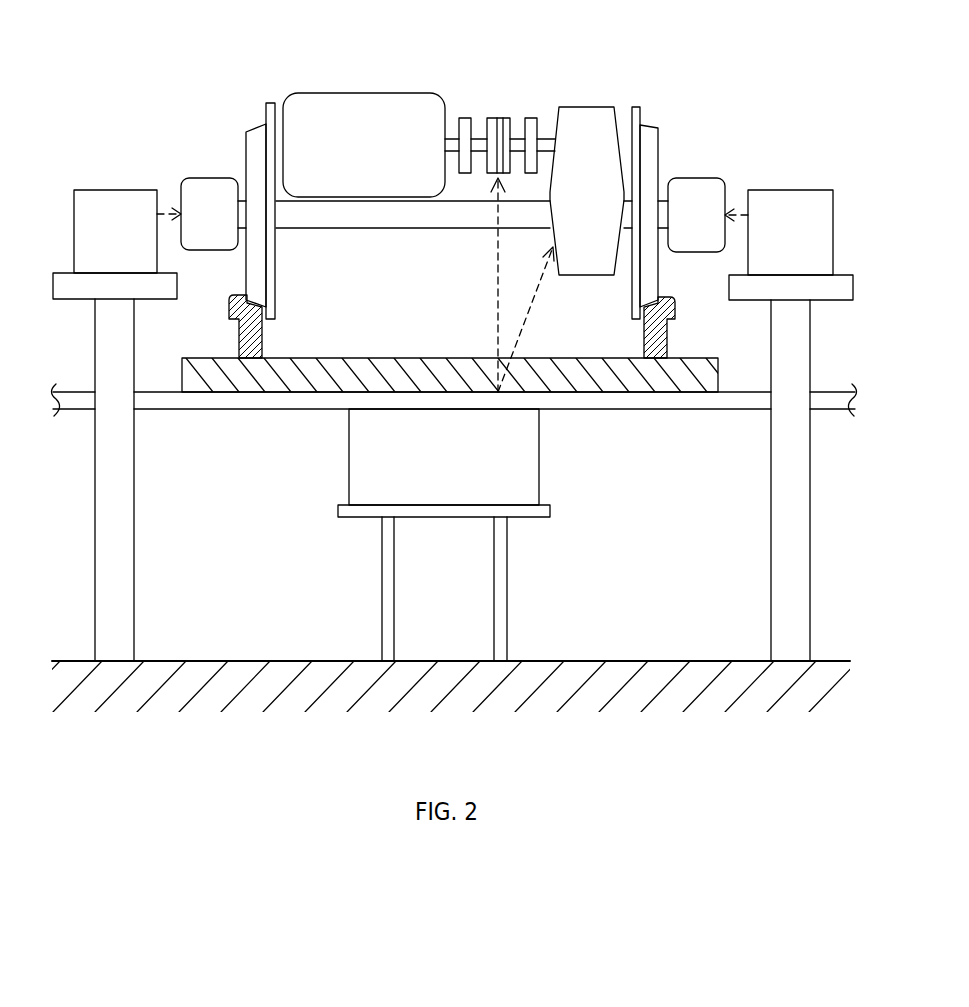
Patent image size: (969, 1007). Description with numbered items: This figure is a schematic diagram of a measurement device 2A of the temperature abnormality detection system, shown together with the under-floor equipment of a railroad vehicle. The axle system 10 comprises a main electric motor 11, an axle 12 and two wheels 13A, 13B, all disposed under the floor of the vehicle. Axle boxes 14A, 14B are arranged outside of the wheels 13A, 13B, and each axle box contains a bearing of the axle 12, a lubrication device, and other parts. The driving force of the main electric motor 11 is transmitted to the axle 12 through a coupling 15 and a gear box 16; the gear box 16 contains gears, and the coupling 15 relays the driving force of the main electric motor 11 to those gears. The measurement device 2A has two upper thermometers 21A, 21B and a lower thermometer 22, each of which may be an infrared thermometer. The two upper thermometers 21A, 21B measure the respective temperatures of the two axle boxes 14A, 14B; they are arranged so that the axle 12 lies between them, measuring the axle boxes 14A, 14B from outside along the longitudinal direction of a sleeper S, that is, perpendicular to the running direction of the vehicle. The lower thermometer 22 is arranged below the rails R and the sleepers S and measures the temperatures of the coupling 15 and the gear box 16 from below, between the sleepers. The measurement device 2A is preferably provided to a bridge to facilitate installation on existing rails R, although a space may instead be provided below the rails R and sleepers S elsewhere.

The measurement device 2A is at (816, 458).
The inspection device 10 is at (483, 189).
The main electric motor 11 is at (367, 110).
The axle 12 is at (419, 220).
The wheel 13A is at (256, 140).
The wheel 13B is at (667, 218).
The axle box 14A is at (211, 192).
The axle box 14B is at (697, 192).
The coupling 15 is at (478, 127).
The gear box 16 is at (590, 122).
The upper thermometer 21A is at (110, 225).
The upper thermometer 21B is at (803, 226).
The lower thermometer 22 is at (519, 460).
The sleeper S is at (560, 368).
The rail R is at (675, 307).